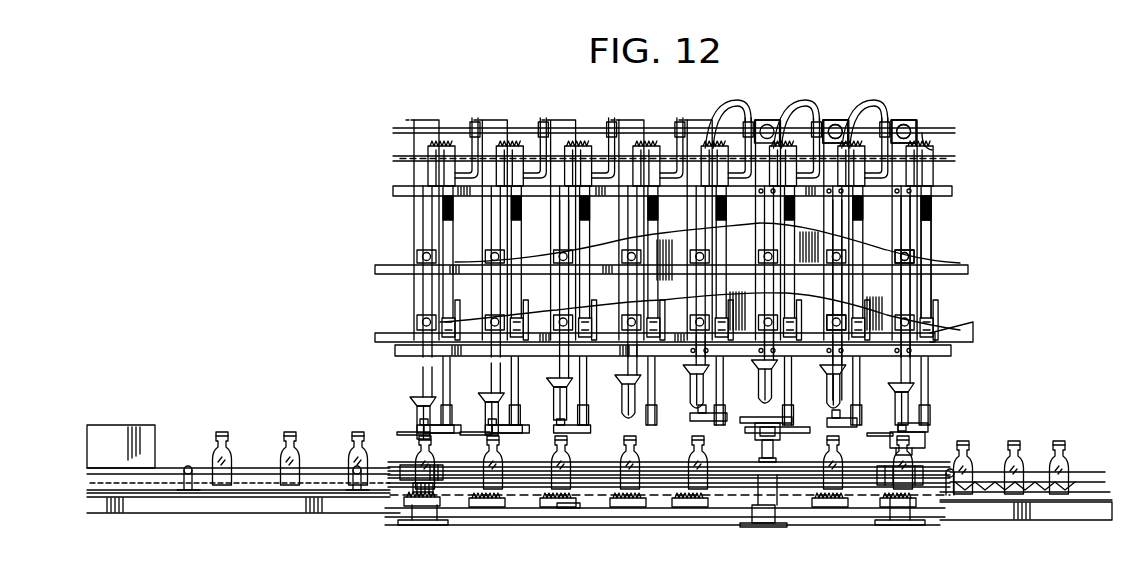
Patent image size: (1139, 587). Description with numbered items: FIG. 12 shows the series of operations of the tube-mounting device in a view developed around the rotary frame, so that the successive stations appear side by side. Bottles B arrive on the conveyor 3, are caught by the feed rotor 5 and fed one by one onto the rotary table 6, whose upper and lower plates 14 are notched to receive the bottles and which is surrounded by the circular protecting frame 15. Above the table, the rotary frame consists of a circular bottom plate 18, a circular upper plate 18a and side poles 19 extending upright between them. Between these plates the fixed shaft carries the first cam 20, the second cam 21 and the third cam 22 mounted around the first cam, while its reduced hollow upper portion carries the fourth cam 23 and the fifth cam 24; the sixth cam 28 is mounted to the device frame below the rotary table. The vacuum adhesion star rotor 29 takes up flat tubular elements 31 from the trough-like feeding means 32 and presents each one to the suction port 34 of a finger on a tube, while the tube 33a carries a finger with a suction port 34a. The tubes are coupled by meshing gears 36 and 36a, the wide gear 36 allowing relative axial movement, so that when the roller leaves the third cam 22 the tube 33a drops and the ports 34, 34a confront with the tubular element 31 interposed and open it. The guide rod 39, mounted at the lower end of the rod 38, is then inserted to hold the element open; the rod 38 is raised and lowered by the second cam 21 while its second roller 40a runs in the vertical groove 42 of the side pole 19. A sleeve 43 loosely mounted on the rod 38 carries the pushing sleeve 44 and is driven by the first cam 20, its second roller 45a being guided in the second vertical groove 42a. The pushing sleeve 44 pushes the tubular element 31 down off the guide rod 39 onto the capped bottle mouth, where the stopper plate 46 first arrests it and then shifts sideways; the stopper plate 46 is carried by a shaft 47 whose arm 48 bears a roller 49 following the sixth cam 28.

The conveyor 3 is at (1083, 498).
The feed rotor 5 is at (886, 468).
The rotary table 6 is at (726, 509).
The upper and lower plates 14 is at (790, 478).
The circular protecting frame 15 is at (532, 470).
The circular bottom plate 18 is at (948, 352).
The circular upper plate 18a is at (938, 192).
The side poles 19 is at (831, 146).
The first cam 20 is at (868, 312).
The second cam 21 is at (866, 262).
The third cam 22 is at (880, 346).
The fourth cam 23 is at (925, 158).
The fifth cam 24 is at (940, 133).
The sixth cam 28 is at (660, 518).
The vacuum adhesion star rotor 29 is at (803, 426).
The tubular elements 31 is at (554, 430).
The trough-like feeding means 32 is at (755, 446).
The tubes 33a is at (930, 246).
The suction port 34 is at (910, 438).
The suction port 34a is at (920, 426).
The gear 36 is at (928, 228).
The gear 36a is at (926, 216).
The rod 38 is at (560, 237).
The guide rod 39 is at (556, 416).
The second roller 40a is at (938, 262).
The vertical groove 42 is at (762, 237).
The second vertical groove 42a is at (760, 312).
The sleeve 43 is at (559, 362).
The pushing sleeve 44 is at (554, 388).
The second roller 45a is at (930, 305).
The stopper plate 46 is at (403, 432).
The shaft 47 is at (575, 452).
The arm 48 is at (557, 510).
The roller 49 is at (585, 508).
The bottle B is at (1058, 458).